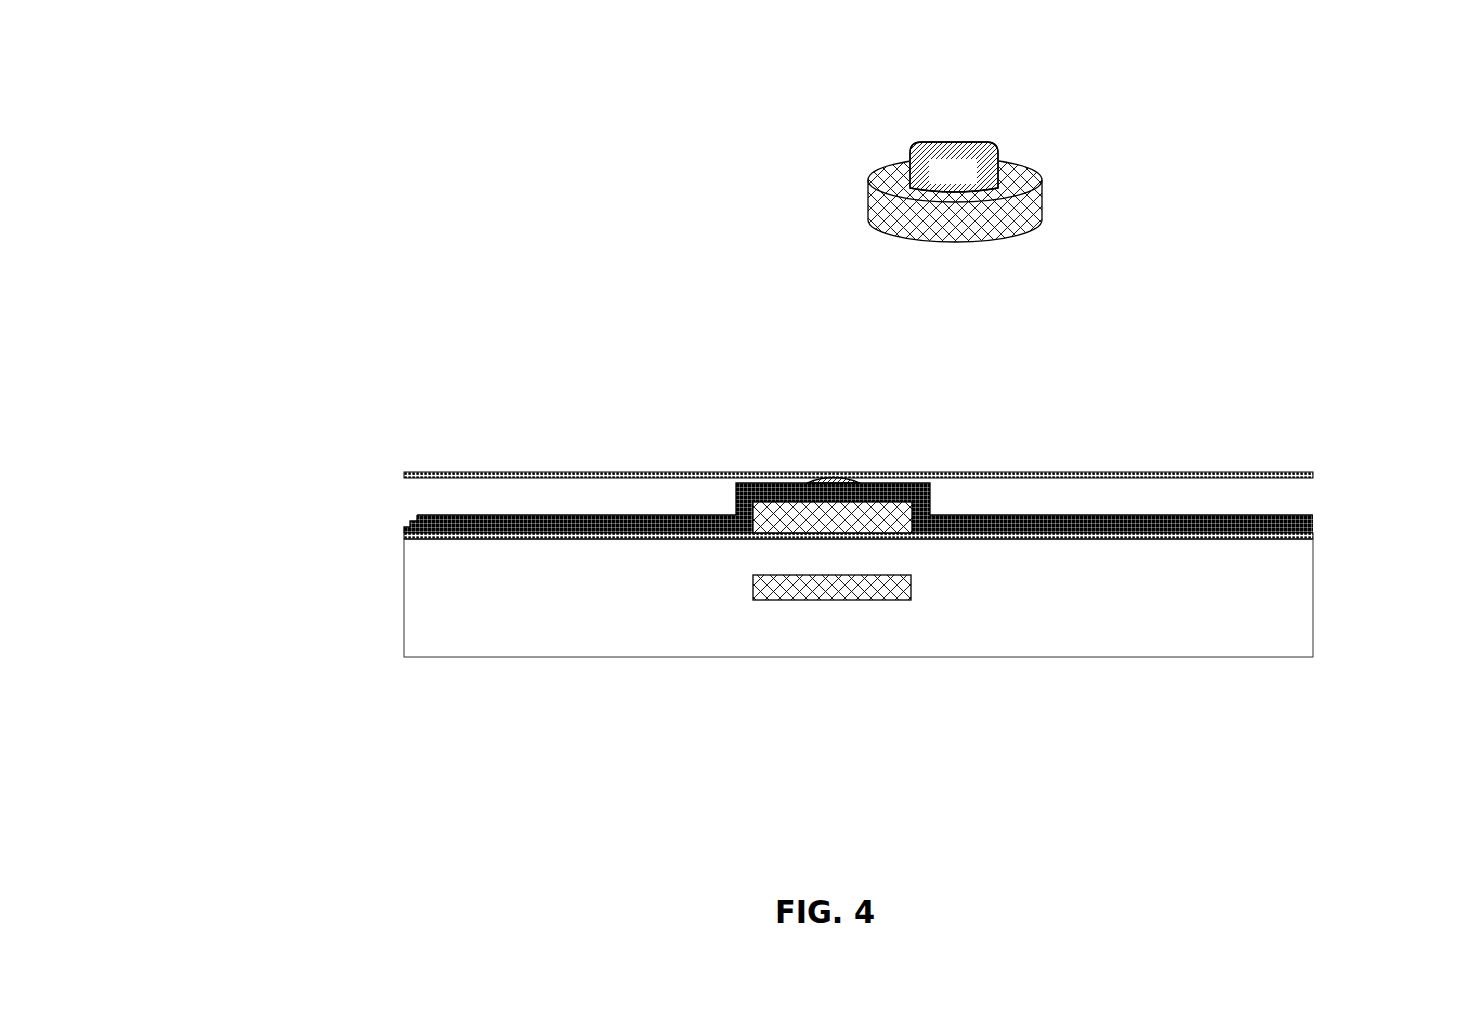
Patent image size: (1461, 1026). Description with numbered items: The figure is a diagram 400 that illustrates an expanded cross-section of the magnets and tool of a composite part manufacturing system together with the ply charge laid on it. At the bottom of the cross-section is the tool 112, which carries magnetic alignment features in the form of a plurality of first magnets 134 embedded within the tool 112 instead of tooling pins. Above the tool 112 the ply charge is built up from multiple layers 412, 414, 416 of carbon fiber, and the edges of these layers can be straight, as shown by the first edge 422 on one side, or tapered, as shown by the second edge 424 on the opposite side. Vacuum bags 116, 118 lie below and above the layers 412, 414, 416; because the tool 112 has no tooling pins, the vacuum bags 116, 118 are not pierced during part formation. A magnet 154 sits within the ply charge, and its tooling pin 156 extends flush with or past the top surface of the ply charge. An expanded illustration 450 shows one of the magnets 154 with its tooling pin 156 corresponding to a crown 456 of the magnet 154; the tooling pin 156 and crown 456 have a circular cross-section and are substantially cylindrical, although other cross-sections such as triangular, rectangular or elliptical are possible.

The diagram 400 is at (784, 333).
The expanded illustration 450 is at (932, 323).
The magnet 154 is at (1017, 227).
The tooling pin 156 is at (978, 147).
The crown 456 is at (973, 181).
The first edge 422 is at (1360, 427).
The vacuum bag 118 is at (1022, 472).
The layer 412 is at (1313, 515).
The layer 414 is at (1313, 524).
The layer 416 is at (1313, 535).
The vacuum bag 116 is at (1033, 538).
The tool 112 is at (495, 614).
The magnet 134 is at (830, 587).
The second edge 424 is at (395, 510).